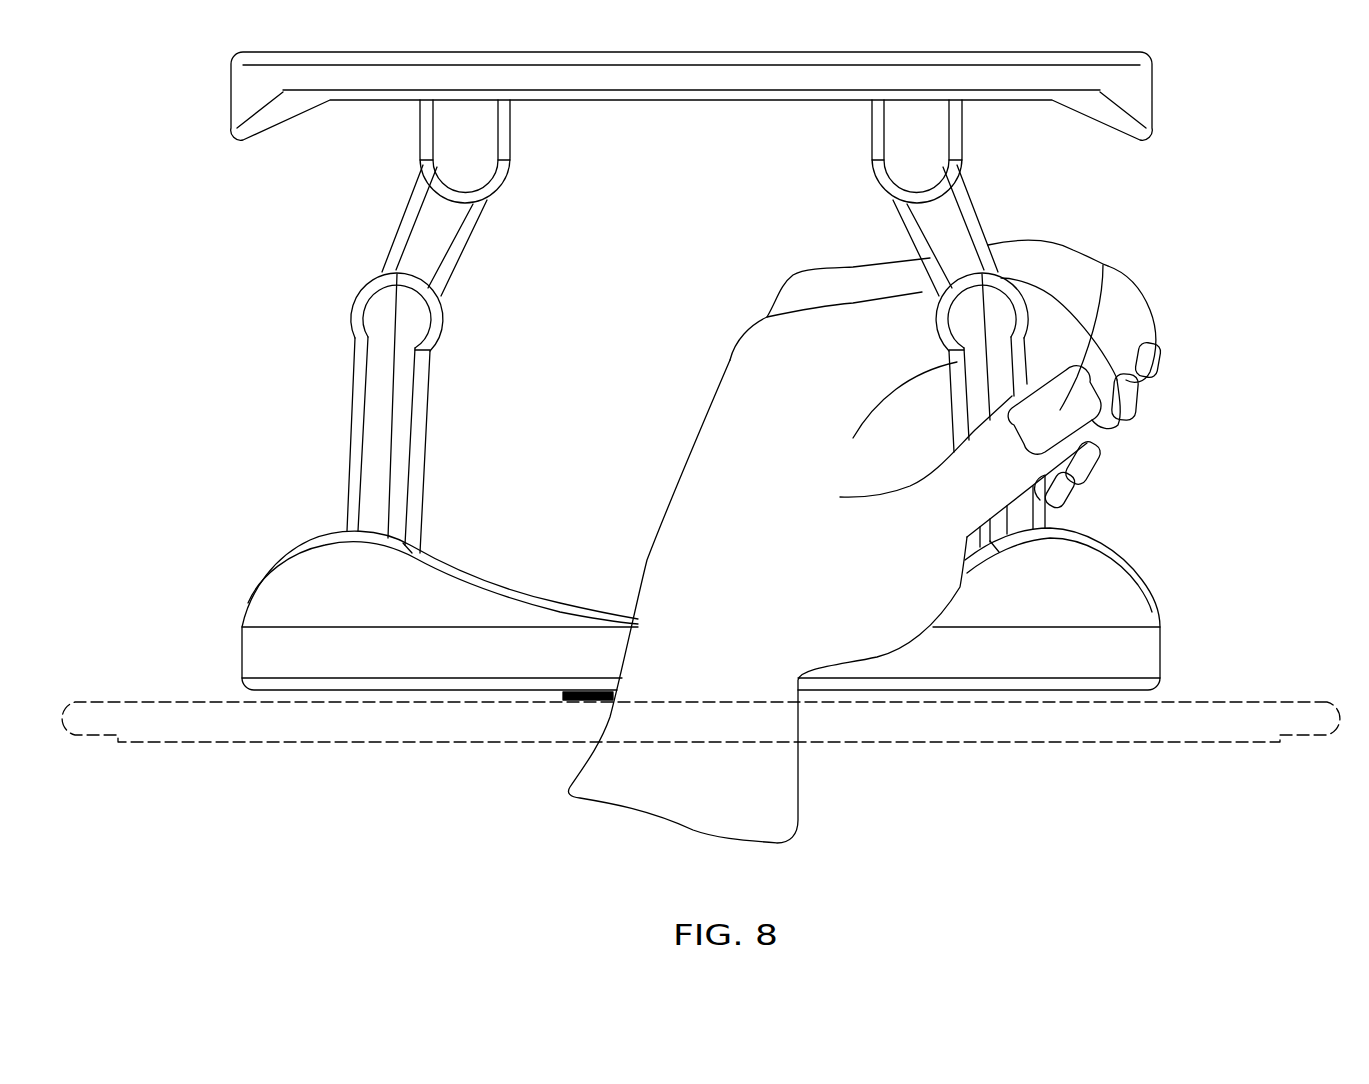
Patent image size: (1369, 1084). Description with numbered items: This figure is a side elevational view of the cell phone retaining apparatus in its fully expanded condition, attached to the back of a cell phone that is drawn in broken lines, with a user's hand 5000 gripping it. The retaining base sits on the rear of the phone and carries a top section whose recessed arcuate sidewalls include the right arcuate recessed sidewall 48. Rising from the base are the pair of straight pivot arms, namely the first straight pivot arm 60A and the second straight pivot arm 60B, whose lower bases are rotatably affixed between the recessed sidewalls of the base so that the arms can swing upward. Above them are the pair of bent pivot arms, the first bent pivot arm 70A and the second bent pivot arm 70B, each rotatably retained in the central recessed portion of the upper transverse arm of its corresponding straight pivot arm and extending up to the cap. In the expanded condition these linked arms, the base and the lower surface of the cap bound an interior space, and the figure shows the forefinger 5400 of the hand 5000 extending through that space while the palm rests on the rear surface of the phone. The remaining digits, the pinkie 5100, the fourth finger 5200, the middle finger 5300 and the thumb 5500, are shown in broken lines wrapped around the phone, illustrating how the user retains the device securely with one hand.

The right arcuate recessed sidewall 48 is at (580, 600).
The first straight pivot arm 60A is at (373, 458).
The second straight pivot arm 60B is at (978, 410).
The first bent pivot arm 70A is at (415, 248).
The second bent pivot arm 70B is at (962, 233).
The hand 5000 is at (806, 258).
The pinkie 5100 is at (1065, 490).
The fourth finger 5200 is at (1090, 455).
The middle finger 5300 is at (1128, 338).
The forefinger 5400 is at (1128, 402).
The thumb 5500 is at (1063, 407).